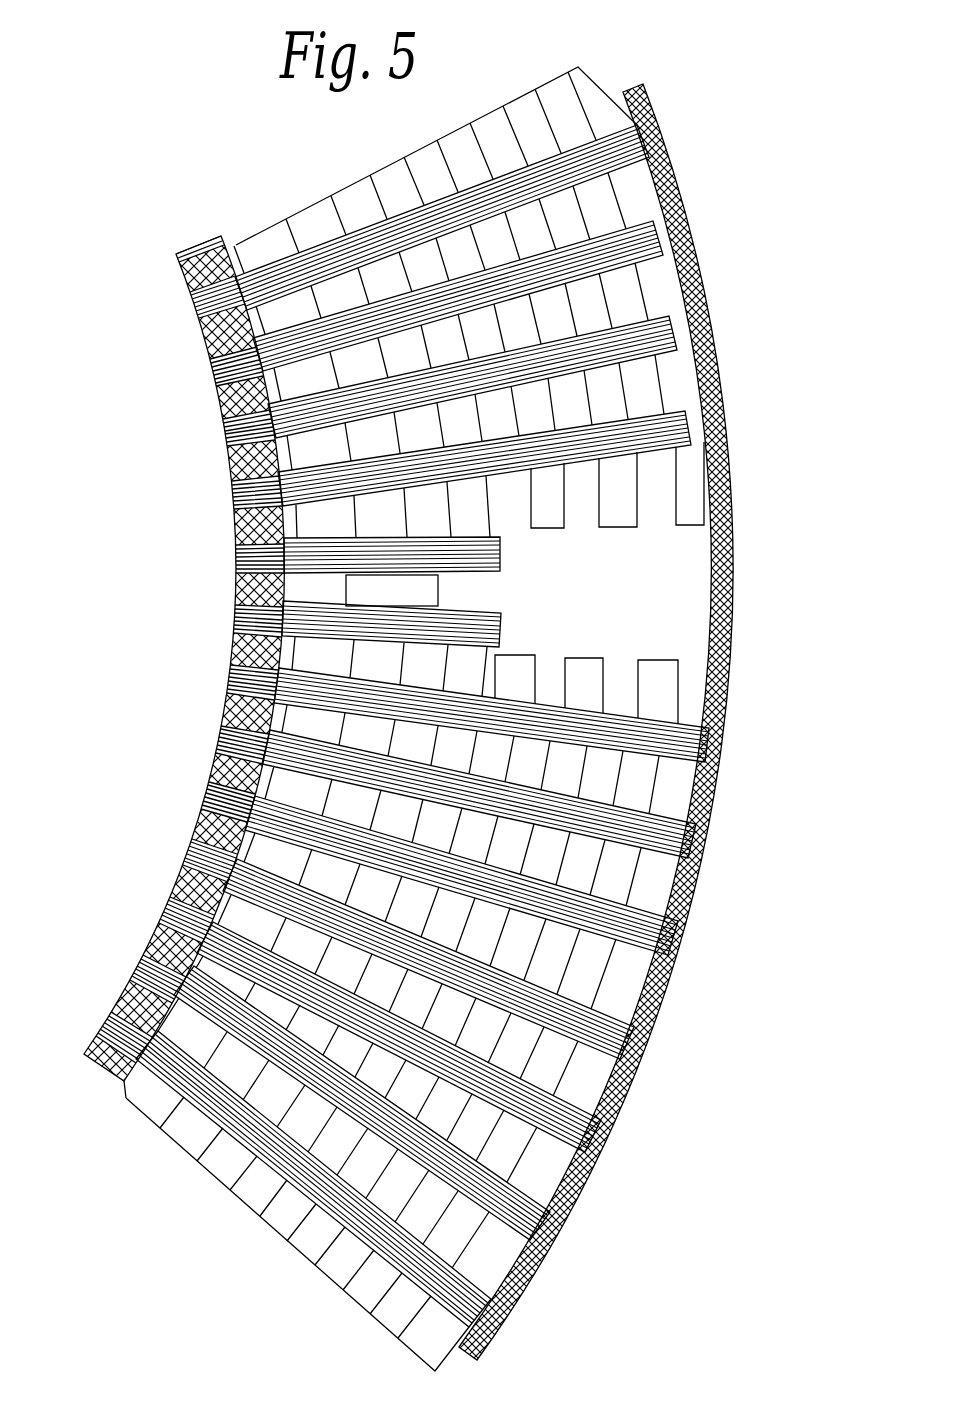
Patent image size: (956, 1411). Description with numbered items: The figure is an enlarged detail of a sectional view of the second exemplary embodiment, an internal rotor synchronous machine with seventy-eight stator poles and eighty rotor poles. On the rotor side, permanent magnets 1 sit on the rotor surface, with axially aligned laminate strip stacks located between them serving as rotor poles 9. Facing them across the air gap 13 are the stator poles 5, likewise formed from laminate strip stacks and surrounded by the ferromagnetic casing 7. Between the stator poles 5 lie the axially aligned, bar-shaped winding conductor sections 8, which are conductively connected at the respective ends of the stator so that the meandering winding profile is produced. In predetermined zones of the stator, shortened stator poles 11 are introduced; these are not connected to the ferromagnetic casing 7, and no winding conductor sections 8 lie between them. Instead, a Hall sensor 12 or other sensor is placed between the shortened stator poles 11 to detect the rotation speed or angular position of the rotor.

The permanent magnet 1 is at (167, 932).
The stator pole 5 is at (626, 934).
The ferromagnetic casing 7 is at (605, 1124).
The winding conductor section 8 is at (647, 679).
The rotor pole 9 is at (167, 905).
The shortened stator pole 11 is at (305, 551).
The Hall sensor 12 is at (375, 587).
The air gap 13 is at (163, 658).